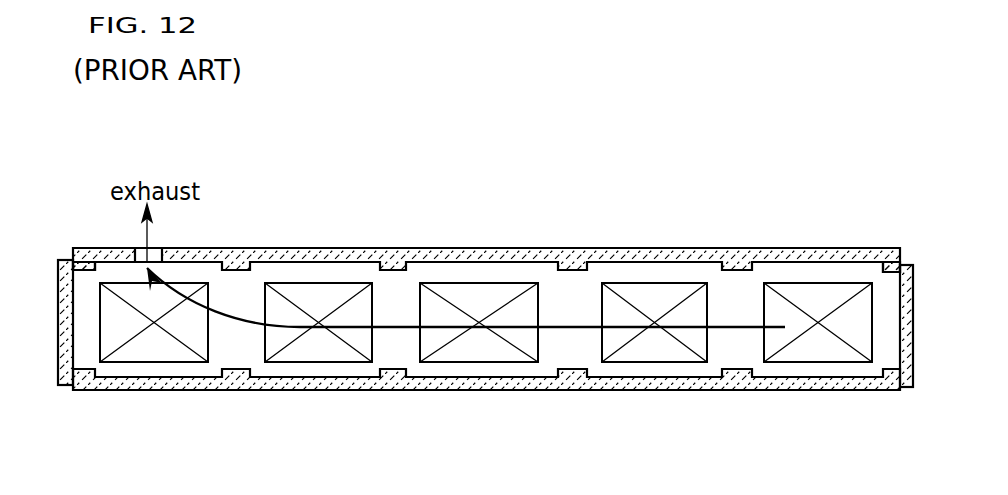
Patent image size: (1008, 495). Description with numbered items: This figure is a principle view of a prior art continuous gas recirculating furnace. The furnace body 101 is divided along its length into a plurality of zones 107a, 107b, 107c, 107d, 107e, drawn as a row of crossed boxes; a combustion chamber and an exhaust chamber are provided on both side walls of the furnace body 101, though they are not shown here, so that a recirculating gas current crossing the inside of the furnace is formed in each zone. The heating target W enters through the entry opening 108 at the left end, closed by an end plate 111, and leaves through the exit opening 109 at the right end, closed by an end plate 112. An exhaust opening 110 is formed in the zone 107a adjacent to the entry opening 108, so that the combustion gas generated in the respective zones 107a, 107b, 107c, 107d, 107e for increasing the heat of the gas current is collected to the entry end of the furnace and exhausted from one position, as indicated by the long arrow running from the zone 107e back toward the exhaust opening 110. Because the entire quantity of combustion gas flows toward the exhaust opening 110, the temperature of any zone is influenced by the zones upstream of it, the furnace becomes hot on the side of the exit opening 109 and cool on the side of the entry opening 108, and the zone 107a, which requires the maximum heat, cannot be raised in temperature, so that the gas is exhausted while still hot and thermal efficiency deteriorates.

The furnace body 101 is at (484, 248).
The zone 107a is at (172, 375).
The zone 107b is at (320, 375).
The zone 107c is at (483, 370).
The zone 107d is at (640, 370).
The zone 107e is at (808, 370).
The entry opening 108 is at (78, 283).
The exit opening 109 is at (893, 295).
The exhaust opening 110 is at (157, 248).
The inlet end plate 111 is at (78, 343).
The outlet end plate 112 is at (900, 345).
The heating target W is at (137, 353).